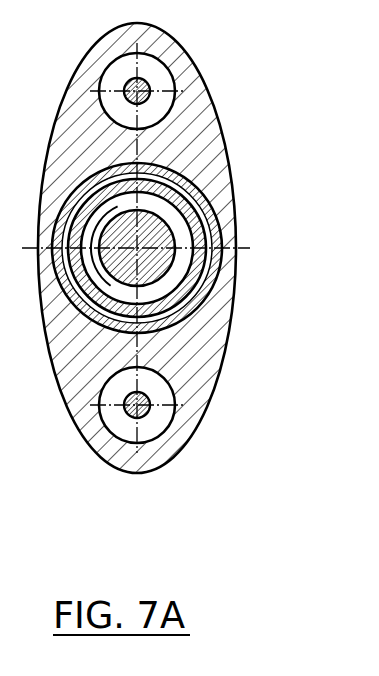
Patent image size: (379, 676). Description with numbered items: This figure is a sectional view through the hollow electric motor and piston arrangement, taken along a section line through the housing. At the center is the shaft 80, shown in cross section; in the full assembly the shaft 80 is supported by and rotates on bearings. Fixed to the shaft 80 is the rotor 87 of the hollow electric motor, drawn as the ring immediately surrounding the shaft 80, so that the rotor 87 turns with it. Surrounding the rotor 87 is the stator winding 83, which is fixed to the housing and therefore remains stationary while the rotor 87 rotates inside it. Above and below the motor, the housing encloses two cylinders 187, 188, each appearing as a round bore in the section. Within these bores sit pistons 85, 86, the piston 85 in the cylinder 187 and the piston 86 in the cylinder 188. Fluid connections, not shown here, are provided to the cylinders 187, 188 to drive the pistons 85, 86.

The shaft 80 is at (223, 320).
The stator winding 83 is at (212, 270).
The piston 85 is at (147, 97).
The piston 86 is at (146, 417).
The rotor 87 is at (217, 211).
The cylinder 187 is at (172, 83).
The cylinder 188 is at (176, 452).